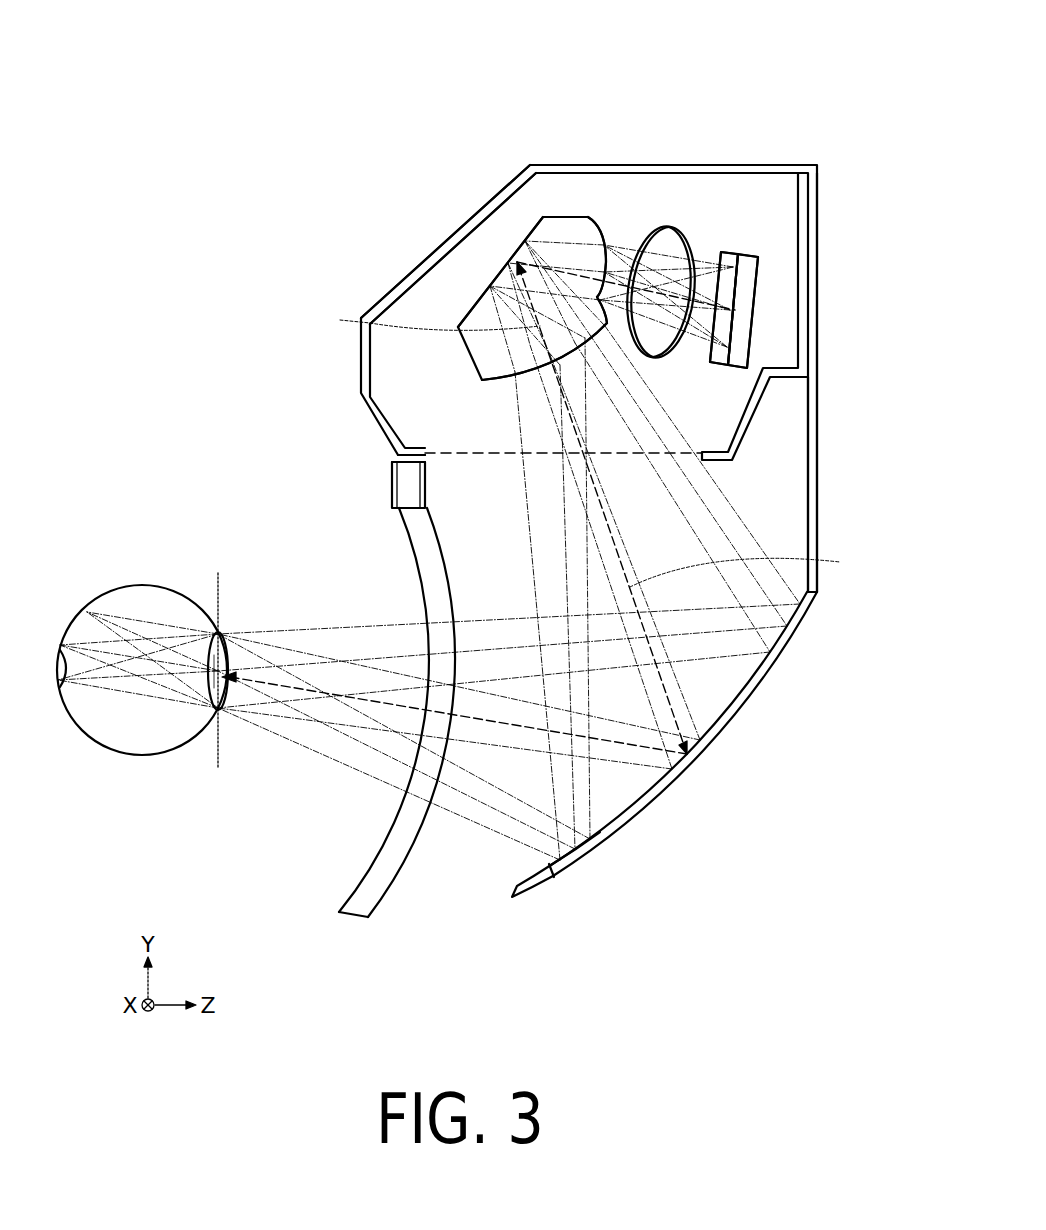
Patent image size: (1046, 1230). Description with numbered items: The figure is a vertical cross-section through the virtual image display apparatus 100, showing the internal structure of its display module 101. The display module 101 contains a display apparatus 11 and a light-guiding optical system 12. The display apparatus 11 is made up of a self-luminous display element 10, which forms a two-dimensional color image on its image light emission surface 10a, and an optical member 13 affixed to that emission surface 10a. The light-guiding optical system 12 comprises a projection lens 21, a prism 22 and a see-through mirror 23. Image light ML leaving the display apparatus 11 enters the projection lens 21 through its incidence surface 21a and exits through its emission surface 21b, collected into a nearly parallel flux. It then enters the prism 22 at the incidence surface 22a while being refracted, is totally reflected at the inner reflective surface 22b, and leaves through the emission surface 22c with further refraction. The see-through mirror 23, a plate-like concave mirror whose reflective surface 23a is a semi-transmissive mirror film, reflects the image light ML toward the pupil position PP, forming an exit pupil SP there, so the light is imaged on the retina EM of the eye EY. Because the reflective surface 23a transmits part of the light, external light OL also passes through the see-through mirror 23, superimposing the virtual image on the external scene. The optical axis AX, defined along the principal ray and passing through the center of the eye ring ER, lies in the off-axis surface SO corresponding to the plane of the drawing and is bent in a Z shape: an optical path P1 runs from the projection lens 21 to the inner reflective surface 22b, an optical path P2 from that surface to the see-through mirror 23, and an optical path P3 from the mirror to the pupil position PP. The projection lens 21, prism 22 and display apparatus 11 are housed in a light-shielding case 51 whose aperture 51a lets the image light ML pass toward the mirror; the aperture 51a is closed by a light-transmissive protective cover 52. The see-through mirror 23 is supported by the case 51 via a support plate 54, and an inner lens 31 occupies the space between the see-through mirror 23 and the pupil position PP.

The head-mounted display device 100 is at (838, 126).
The display module 101 is at (323, 178).
The display apparatus 11 is at (737, 62).
The optical member 13 is at (725, 258).
The display element 10 is at (752, 262).
The image light emission surface 10a is at (745, 257).
The light-guiding optical system 12 is at (405, 252).
The case 51 is at (803, 245).
The aperture 51a is at (430, 454).
The protective cover 52 is at (460, 453).
The support plate 54 is at (813, 480).
The projection lens 21 is at (662, 228).
The incidence surface 21a is at (693, 255).
The emission surface 21b is at (640, 232).
The prism 22 is at (553, 225).
The incidence surface 22a is at (598, 237).
The inner reflective surface 22b is at (523, 245).
The emission surface 22c is at (492, 380).
The see-through mirror 23 is at (700, 770).
The reflective surface 23a is at (580, 852).
The inner lens 31 is at (355, 912).
The eye EY is at (120, 602).
The pupil position PP is at (217, 587).
The eye ring ER is at (228, 647).
The retina EM is at (67, 707).
The exit pupil SP is at (203, 700).
The optical axis AX is at (352, 812).
The image light ML is at (527, 217).
The optical path P1 is at (598, 396).
The optical path P2 is at (590, 485).
The optical path P3 is at (325, 700).
The off-axis surface SO is at (757, 520).
The external light OL is at (692, 867).